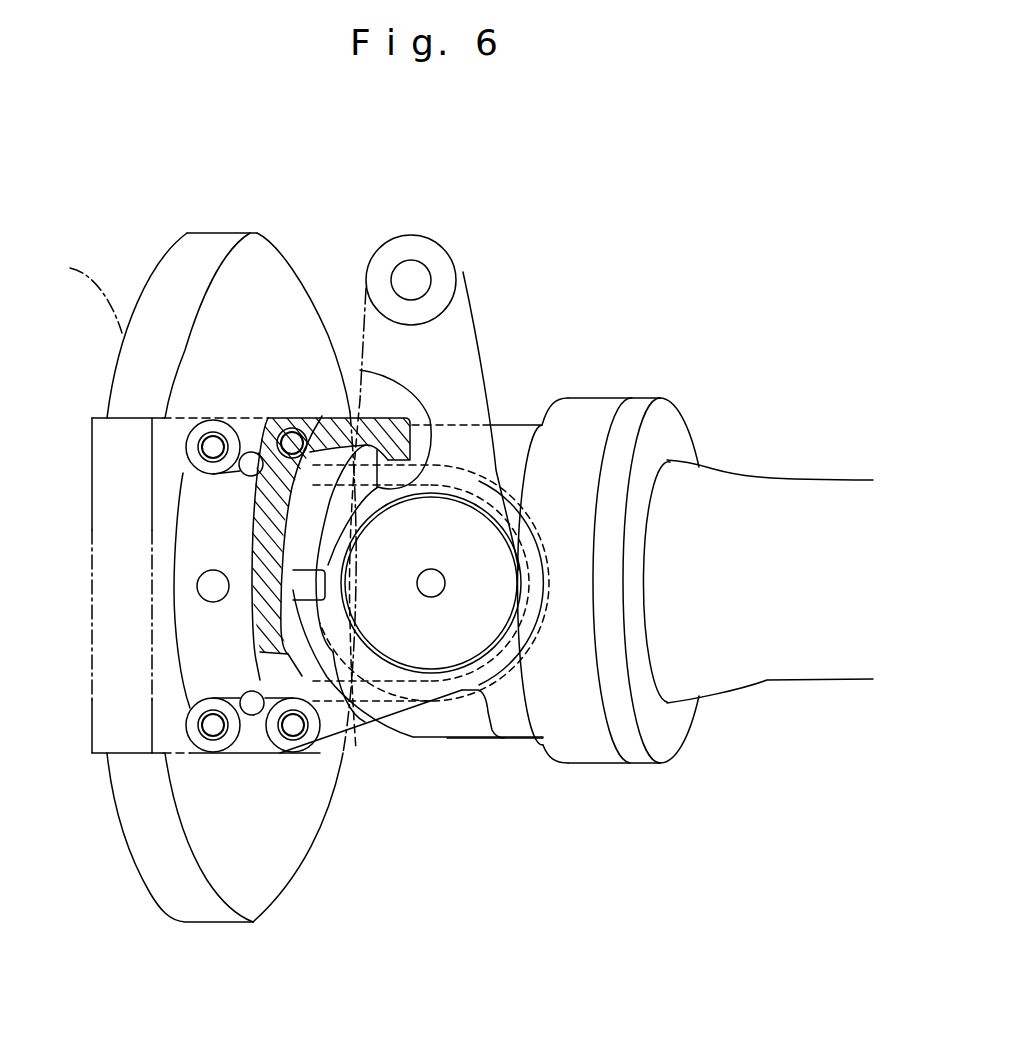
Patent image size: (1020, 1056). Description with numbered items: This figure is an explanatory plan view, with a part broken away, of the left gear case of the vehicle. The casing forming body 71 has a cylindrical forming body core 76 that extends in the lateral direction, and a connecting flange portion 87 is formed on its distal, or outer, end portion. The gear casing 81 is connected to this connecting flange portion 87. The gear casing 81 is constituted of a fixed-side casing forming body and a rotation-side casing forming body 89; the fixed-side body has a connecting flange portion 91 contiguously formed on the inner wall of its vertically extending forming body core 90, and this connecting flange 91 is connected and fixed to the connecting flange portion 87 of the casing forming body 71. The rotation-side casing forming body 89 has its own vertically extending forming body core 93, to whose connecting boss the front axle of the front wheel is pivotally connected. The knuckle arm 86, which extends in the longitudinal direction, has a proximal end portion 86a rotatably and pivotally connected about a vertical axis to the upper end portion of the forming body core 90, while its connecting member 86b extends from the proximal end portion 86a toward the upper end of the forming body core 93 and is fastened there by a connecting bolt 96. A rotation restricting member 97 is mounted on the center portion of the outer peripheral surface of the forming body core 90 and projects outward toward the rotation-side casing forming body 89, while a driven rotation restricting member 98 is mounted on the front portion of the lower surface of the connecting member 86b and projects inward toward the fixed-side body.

The casing forming body 71 is at (831, 410).
The forming body core 76 is at (793, 668).
The gear casing 81 is at (598, 782).
The knuckle arm 86 is at (472, 312).
The proximal end portion 86a is at (448, 650).
The connecting member 86b is at (341, 725).
The connecting flange portion 87 is at (670, 440).
The rotation-side casing forming body 89 is at (123, 256).
The forming body core 90 is at (517, 728).
The connecting flange portion 91 is at (583, 410).
The forming body core 93 is at (76, 292).
The connecting bolt 96 is at (289, 437).
The rotation restricting member 97 is at (258, 517).
The driven rotation restricting member 98 is at (262, 652).